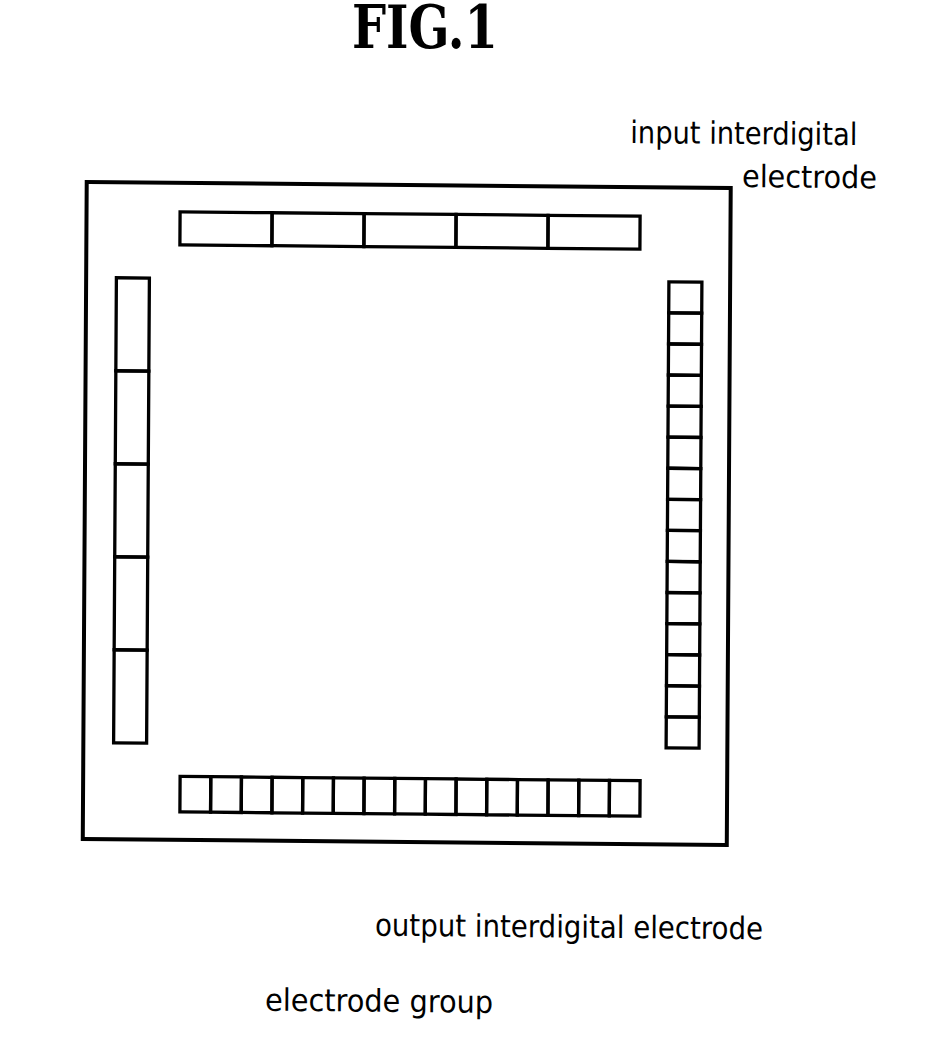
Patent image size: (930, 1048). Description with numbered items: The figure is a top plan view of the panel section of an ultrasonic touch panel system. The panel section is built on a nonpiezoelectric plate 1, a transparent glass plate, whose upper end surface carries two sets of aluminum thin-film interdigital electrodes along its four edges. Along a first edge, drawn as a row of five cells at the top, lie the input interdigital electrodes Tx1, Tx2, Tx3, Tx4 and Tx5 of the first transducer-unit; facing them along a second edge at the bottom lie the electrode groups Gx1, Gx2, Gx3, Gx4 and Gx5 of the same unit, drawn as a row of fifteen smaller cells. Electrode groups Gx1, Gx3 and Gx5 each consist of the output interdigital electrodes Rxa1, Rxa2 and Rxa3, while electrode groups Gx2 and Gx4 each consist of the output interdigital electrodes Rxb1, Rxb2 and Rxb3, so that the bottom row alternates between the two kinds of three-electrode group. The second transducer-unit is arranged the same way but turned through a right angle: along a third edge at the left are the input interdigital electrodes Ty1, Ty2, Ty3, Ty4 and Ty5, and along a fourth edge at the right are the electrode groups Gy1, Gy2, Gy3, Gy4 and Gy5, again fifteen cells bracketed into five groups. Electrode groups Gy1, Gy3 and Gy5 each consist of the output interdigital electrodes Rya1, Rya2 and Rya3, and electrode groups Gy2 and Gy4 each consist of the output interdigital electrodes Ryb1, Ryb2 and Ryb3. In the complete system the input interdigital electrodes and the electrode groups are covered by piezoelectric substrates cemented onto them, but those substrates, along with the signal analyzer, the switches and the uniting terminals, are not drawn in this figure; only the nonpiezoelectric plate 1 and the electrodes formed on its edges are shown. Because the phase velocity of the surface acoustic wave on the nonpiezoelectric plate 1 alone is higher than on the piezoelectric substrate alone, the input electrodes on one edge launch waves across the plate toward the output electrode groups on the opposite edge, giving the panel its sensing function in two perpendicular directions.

The nonpiezoelectric plate 1 is at (101, 237).
The input interdigital electrode Tx1 is at (225, 230).
The input interdigital electrode Tx2 is at (315, 230).
The input interdigital electrode Tx3 is at (405, 230).
The input interdigital electrode Tx4 is at (497, 232).
The input interdigital electrode Tx5 is at (584, 232).
The input interdigital electrode Ty1 is at (121, 328).
The input interdigital electrode Ty2 is at (121, 415).
The input interdigital electrode Ty3 is at (121, 506).
The input interdigital electrode Ty4 is at (121, 603).
The input interdigital electrode Ty5 is at (121, 694).
The output interdigital electrode Rxa1 is at (197, 802).
The output interdigital electrode Rxa2 is at (227, 802).
The output interdigital electrode Rxa3 is at (257, 802).
The output interdigital electrode Rxb1 is at (285, 791).
The output interdigital electrode Rxb2 is at (313, 791).
The output interdigital electrode Rxb3 is at (340, 791).
The output interdigital electrode Rya1 is at (688, 297).
The output interdigital electrode Rya2 is at (688, 330).
The output interdigital electrode Rya3 is at (688, 357).
The output interdigital electrode Ryb1 is at (688, 394).
The output interdigital electrode Ryb2 is at (688, 417).
The output interdigital electrode Ryb3 is at (688, 447).
The electrode group Gx1 is at (365, 947).
The electrode group Gx2 is at (426, 638).
The electrode group Gx3 is at (446, 774).
The electrode group Gx4 is at (538, 774).
The electrode group Gx5 is at (639, 774).
The electrode group Gy1 is at (663, 282).
The electrode group Gy2 is at (663, 376).
The electrode group Gy3 is at (663, 469).
The electrode group Gy4 is at (663, 562).
The electrode group Gy5 is at (663, 742).